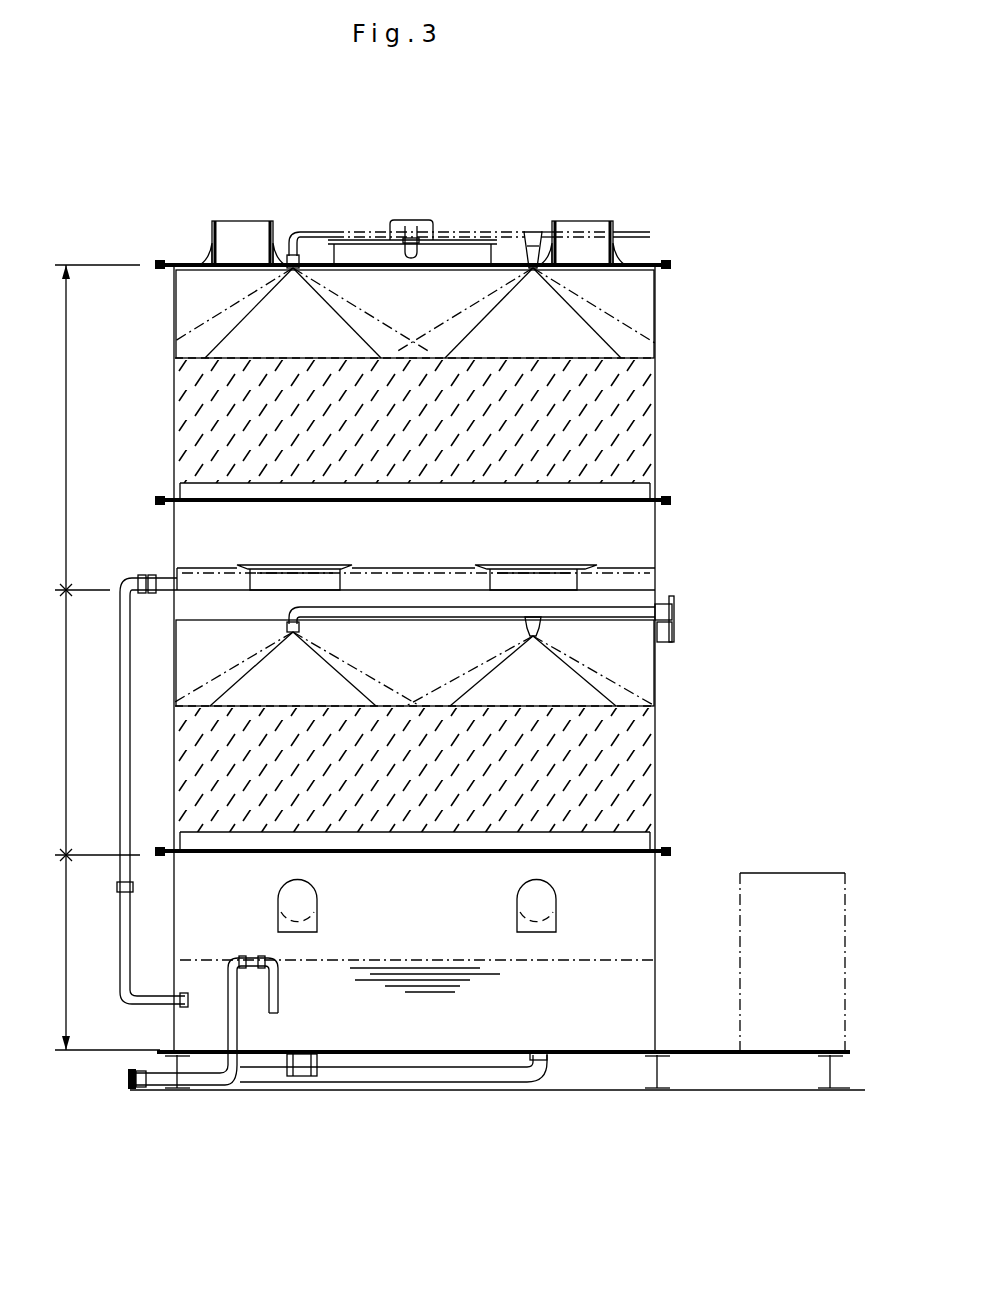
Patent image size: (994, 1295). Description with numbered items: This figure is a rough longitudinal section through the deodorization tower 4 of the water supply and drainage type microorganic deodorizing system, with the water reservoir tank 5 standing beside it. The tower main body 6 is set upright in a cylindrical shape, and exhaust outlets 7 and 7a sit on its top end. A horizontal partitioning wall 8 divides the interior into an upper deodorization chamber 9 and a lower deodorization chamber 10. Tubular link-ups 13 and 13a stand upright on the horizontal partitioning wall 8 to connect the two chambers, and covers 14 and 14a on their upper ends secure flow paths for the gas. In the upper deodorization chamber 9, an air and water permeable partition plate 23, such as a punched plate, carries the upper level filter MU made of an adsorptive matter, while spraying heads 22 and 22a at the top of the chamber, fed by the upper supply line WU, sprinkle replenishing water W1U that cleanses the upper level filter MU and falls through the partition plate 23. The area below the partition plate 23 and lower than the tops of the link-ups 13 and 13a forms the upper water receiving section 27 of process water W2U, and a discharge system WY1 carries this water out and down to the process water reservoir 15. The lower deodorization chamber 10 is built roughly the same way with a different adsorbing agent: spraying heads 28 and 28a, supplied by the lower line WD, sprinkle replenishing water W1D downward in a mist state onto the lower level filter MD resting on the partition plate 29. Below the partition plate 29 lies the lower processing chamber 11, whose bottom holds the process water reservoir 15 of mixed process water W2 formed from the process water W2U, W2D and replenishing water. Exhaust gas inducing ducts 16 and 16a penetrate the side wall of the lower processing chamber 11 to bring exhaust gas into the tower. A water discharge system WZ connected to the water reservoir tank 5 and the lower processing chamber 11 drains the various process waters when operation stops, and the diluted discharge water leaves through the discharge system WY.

The deodorization tower 4 is at (393, 200).
The water reservoir tank 5 is at (812, 907).
The tower main body 6 is at (195, 316).
The exhaust outlet 7 is at (247, 240).
The exhaust outlet 7a is at (568, 240).
The horizontal partitioning wall 8 is at (203, 597).
The upper deodorization chamber 9 is at (92, 430).
The lower deodorization chamber 10 is at (87, 725).
The lower processing chamber 11 is at (98, 952).
The link-up 13 is at (272, 585).
The link-up 13a is at (553, 585).
The cover 14 is at (252, 565).
The cover 14a is at (542, 566).
The process water reservoir 15 is at (635, 988).
The exhaust gas inducing duct 16 is at (300, 925).
The exhaust gas inducing duct 16a is at (542, 925).
The spraying head 22 is at (290, 268).
The spraying head 22a is at (542, 268).
The partition plate 23 is at (600, 468).
The upper water receiving section 27 is at (660, 577).
The spraying head 28 is at (288, 632).
The spraying head 28a is at (546, 642).
The partition plate 29 is at (600, 836).
The upper wash water supply pipe WU is at (637, 232).
The replenishing water W1U is at (603, 300).
The upper level filter MU is at (608, 402).
The process water W2U is at (416, 579).
The lower wash water supply pipe WD is at (676, 606).
The replenishing water W1D is at (600, 678).
The lower level filter MD is at (615, 745).
The process water W2D is at (588, 967).
The mixed process water W2 is at (417, 1006).
The discharge system WY1 is at (118, 870).
The discharge system WY is at (140, 1095).
The water discharge system WZ is at (487, 1076).